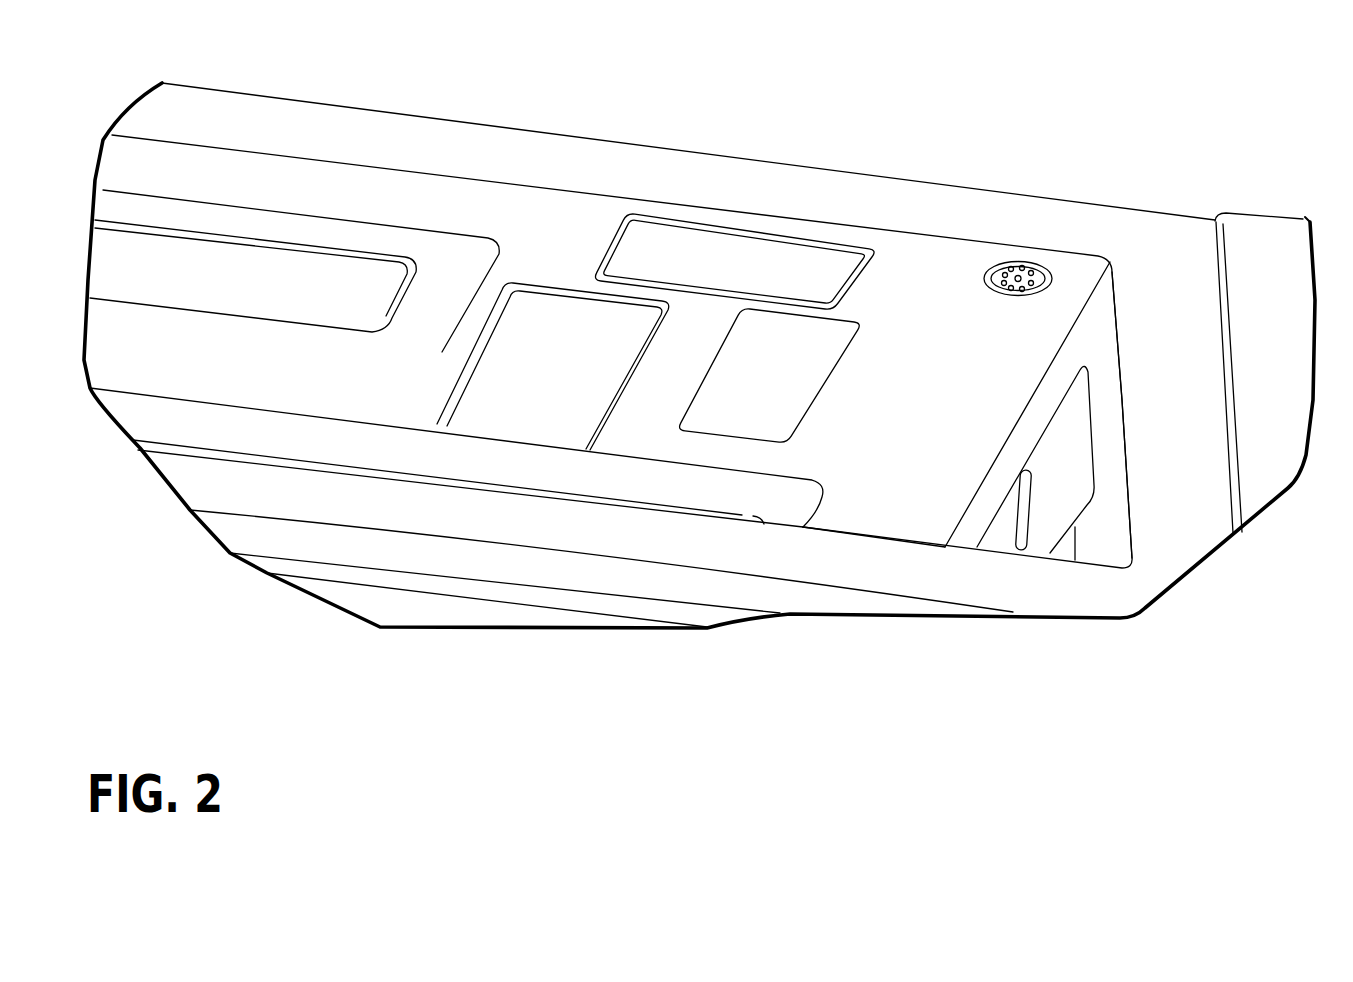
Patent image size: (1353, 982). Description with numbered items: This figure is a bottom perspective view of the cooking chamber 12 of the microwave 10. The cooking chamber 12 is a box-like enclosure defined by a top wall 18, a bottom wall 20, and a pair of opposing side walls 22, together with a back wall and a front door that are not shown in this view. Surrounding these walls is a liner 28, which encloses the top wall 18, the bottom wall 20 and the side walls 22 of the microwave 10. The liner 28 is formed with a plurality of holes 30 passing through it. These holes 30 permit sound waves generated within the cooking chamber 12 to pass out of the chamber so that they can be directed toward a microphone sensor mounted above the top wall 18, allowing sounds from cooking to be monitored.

The microwave 10 is at (867, 137).
The cooking chamber 12 is at (950, 411).
The top wall 18 is at (563, 218).
The bottom wall 20 is at (860, 540).
The opposing side walls 22 is at (1110, 483).
The liner 28 is at (907, 450).
The holes 30 is at (1022, 261).